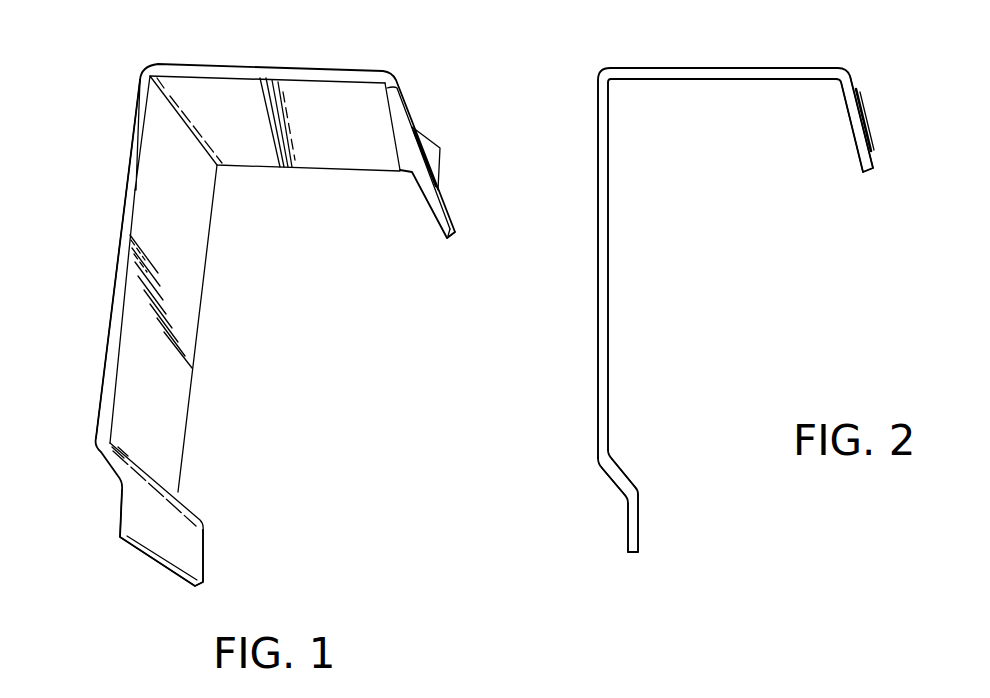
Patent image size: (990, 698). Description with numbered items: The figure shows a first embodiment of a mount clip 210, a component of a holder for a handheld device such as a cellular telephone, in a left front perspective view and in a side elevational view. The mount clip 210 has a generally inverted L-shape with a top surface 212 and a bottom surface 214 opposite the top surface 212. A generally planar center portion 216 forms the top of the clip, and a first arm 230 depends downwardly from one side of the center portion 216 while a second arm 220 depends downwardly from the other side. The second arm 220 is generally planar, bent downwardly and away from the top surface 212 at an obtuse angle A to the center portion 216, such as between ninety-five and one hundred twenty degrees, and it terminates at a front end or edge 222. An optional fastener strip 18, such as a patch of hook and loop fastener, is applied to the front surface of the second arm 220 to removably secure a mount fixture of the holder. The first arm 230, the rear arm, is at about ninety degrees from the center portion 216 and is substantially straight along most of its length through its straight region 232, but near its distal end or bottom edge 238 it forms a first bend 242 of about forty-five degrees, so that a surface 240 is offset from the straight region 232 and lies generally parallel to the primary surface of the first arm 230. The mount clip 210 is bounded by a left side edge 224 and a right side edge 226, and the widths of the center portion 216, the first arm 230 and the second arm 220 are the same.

In FIG. 1, the mount clip 210 is at (118, 74).
In FIG. 2, the mount clip 210 is at (582, 71).
In FIG. 2, the top surface 212 is at (733, 67).
In FIG. 1, the bottom surface 214 is at (320, 150).
In FIG. 2, the bottom surface 214 is at (700, 80).
In FIG. 1, the center portion 216 is at (270, 62).
In FIG. 1, the fastener strip 18 is at (425, 150).
In FIG. 2, the fastener strip 18 is at (868, 118).
In FIG. 1, the second arm 220 is at (452, 195).
In FIG. 2, the second arm 220 is at (853, 80).
In FIG. 1, the front end or edge 222 is at (447, 240).
In FIG. 2, the front end or edge 222 is at (866, 176).
In FIG. 1, the left side edge 224 is at (118, 300).
In FIG. 1, the right side edge 226 is at (193, 343).
In FIG. 1, the first arm 230 is at (125, 192).
In FIG. 2, the first arm 230 is at (598, 277).
In FIG. 2, the straight region 232 is at (609, 310).
In FIG. 1, the bottom edge 238 is at (155, 565).
In FIG. 2, the bottom edge 238 is at (632, 556).
In FIG. 1, the surface 240 is at (193, 556).
In FIG. 2, the surface 240 is at (640, 518).
In FIG. 1, the first bend 242 is at (177, 502).
In FIG. 2, the first bend 242 is at (622, 472).
In FIG. 2, the obtuse angle A is at (852, 146).